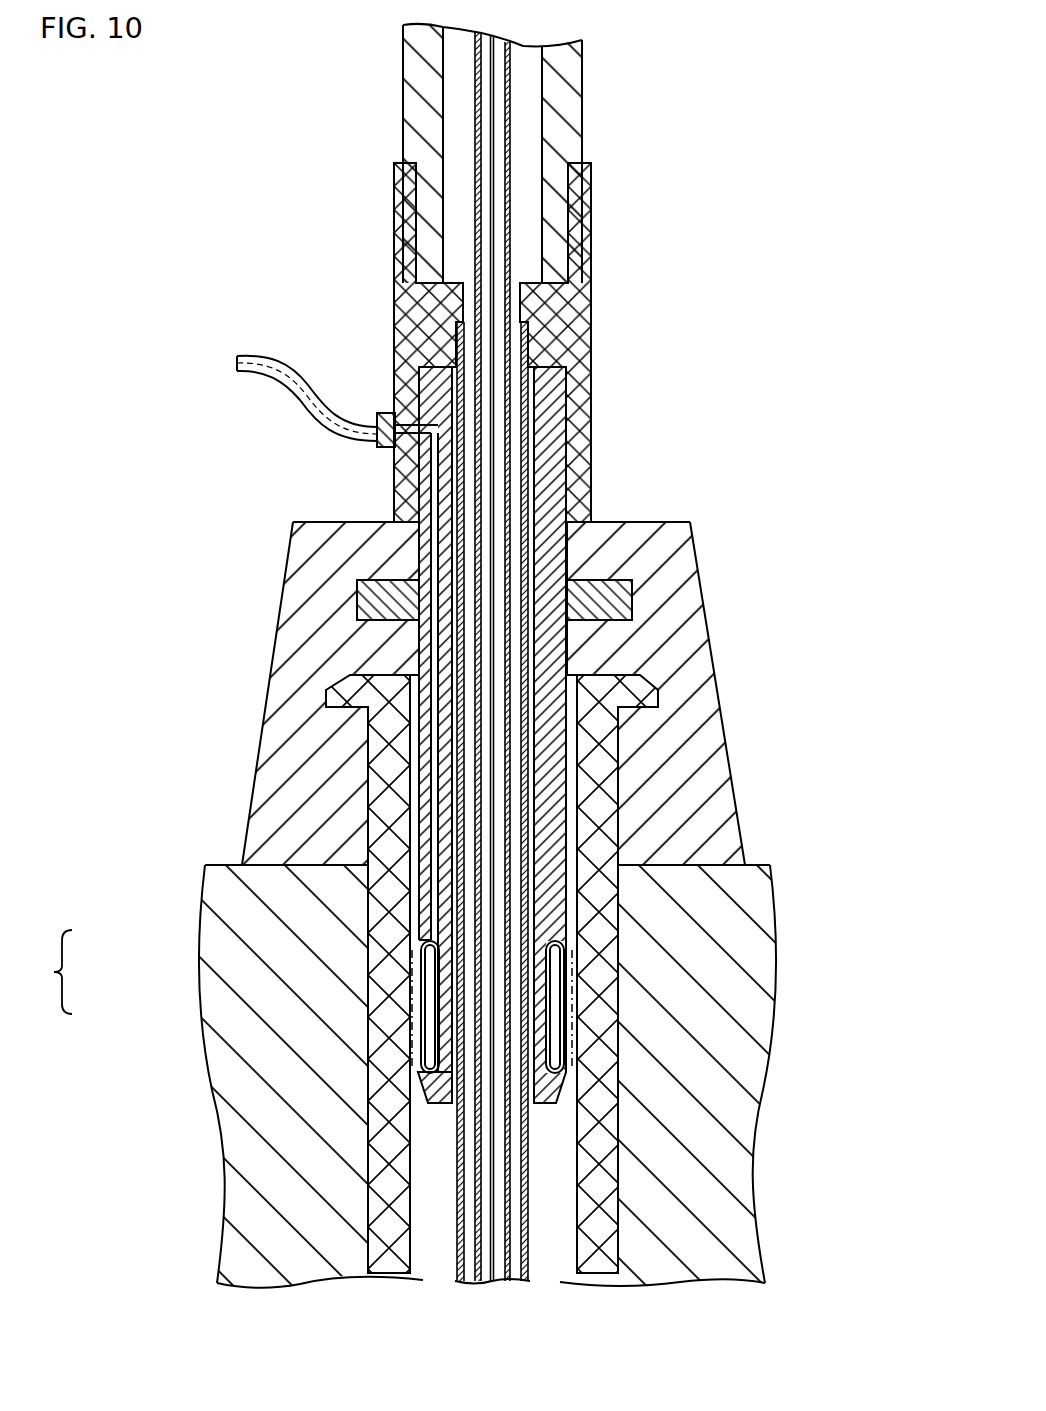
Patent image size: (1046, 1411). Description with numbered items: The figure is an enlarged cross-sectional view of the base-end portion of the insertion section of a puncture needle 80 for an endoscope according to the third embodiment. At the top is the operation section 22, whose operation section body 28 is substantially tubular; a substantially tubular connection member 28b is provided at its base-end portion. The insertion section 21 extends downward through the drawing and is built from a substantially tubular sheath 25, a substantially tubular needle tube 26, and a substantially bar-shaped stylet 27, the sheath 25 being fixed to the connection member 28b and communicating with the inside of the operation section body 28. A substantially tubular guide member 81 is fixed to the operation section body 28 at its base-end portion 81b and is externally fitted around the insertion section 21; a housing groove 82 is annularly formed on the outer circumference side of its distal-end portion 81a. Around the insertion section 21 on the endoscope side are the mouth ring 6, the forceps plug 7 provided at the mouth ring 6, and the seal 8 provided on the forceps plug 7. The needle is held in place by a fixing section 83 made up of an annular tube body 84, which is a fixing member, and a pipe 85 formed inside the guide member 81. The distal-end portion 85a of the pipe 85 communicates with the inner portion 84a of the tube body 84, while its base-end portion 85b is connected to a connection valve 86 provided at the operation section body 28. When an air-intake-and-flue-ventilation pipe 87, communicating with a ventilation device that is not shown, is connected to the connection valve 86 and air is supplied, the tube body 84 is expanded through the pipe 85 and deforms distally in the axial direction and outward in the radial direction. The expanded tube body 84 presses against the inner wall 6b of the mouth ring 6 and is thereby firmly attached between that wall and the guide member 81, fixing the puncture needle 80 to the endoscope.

The puncture needle for the endoscope 80 is at (784, 78).
The operation section 22 is at (585, 72).
The operation section body 28 is at (585, 123).
The needle tube 26 is at (508, 157).
The stylet 27 is at (493, 238).
The connection member 28b is at (592, 345).
The sheath 25 is at (526, 1197).
The base-end portion of the pipe 85b is at (394, 462).
The pipe 85 is at (440, 884).
The distal-end portion of the pipe 85a is at (434, 934).
The tube body 84 is at (430, 1022).
The inner portion of the tube body 84a is at (436, 1052).
The housing groove 82 is at (438, 1090).
The base-end portion of the guide member 81b is at (548, 452).
The guide member 81 is at (553, 793).
The distal-end portion of the guide member 81a is at (548, 1008).
The connection valve 86 is at (382, 415).
The air-intake-and-flue-ventilation pipe 87 is at (278, 378).
The forceps plug 7 is at (693, 631).
The seal 8 is at (634, 600).
The mouth ring 6 is at (600, 741).
The inner wall of the mouth ring 6b is at (410, 1200).
The insertion section 21 is at (526, 1248).
The fixing section 83 is at (47, 972).